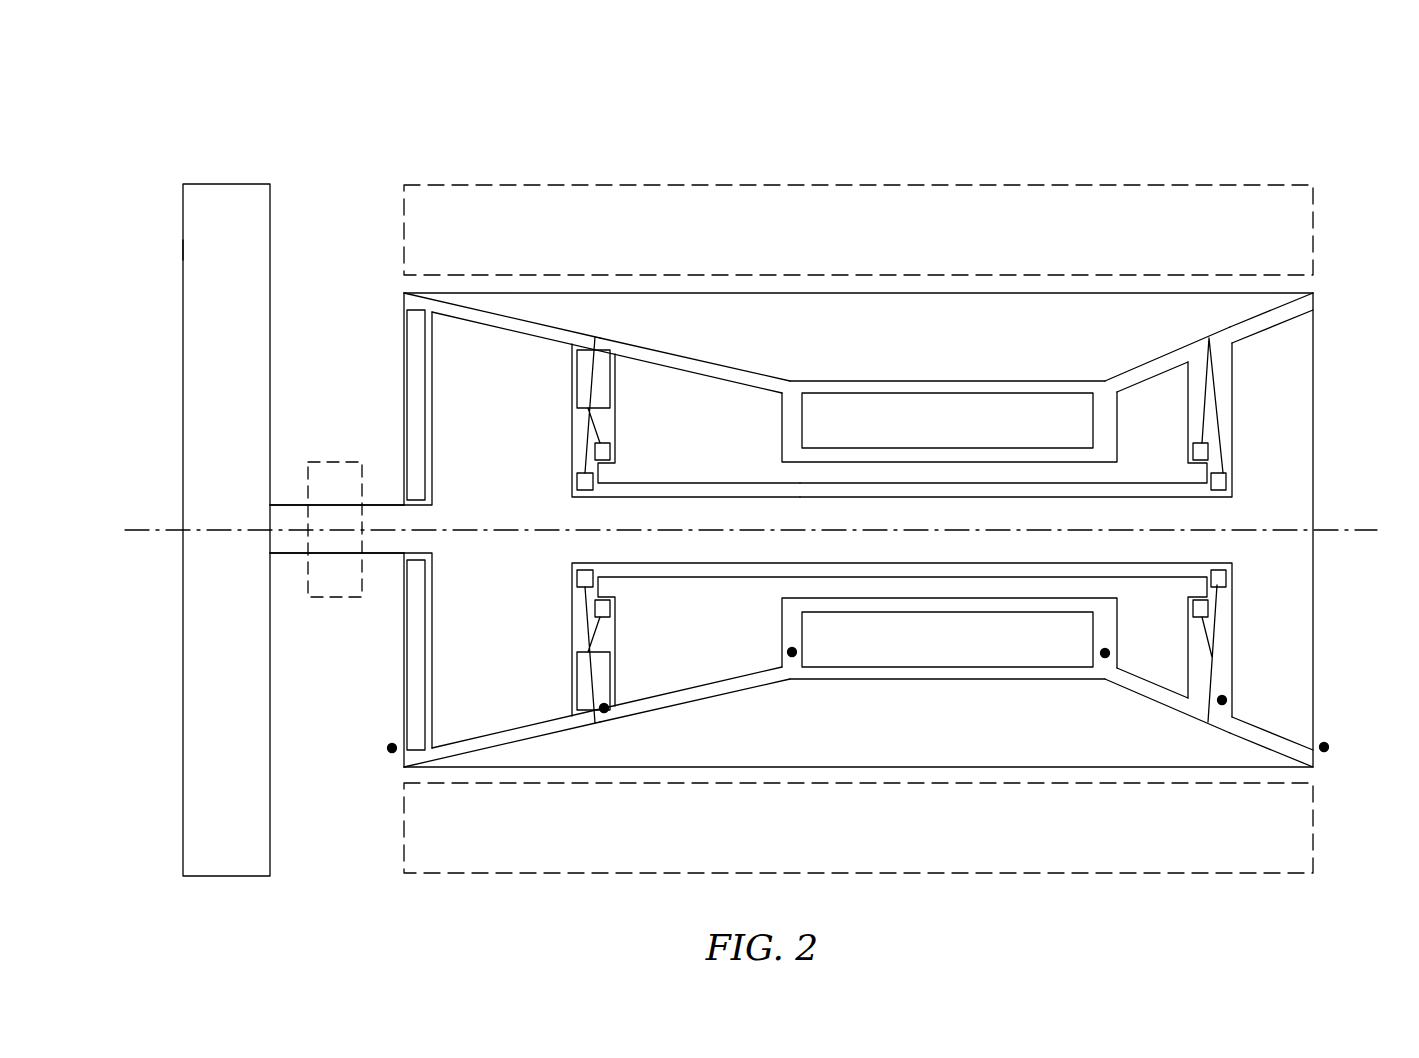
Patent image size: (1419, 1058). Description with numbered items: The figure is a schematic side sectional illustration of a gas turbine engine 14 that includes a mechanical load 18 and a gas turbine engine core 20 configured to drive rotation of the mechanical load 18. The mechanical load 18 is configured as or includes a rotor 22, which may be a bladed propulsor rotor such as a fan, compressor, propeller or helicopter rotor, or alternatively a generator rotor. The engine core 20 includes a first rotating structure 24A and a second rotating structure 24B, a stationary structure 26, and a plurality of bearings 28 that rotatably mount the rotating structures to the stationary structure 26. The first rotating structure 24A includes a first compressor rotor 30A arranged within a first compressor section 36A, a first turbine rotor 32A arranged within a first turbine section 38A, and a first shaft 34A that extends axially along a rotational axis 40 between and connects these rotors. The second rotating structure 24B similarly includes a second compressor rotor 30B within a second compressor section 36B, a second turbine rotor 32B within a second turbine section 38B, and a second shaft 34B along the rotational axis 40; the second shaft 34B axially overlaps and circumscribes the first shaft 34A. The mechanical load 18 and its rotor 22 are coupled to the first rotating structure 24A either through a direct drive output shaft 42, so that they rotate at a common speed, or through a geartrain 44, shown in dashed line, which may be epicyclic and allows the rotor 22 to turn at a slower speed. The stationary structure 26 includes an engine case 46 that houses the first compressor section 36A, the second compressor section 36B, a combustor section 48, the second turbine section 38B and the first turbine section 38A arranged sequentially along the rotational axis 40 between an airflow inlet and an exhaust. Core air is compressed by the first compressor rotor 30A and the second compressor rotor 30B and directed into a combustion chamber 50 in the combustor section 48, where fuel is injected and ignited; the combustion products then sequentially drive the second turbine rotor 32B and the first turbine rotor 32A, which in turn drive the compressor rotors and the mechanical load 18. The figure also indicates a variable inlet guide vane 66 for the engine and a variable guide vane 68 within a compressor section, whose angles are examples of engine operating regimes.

The gas turbine engine 14 is at (303, 109).
The mechanical load 18 is at (183, 184).
The gas turbine engine core 20 is at (400, 272).
The rotor 22 is at (183, 250).
The first rotating structure 24A is at (428, 388).
The second rotating structure 24B is at (652, 362).
The stationary structure 26 is at (950, 292).
The bearings 28 is at (585, 569).
The first compressor rotor 30A is at (500, 322).
The second compressor rotor 30B is at (718, 377).
The first turbine rotor 32A is at (1267, 328).
The second turbine rotor 32B is at (1153, 373).
The first shaft 34A is at (667, 493).
The second shaft 34B is at (857, 483).
The first compressor section 36A is at (506, 748).
The second compressor section 36B is at (695, 690).
The first turbine section 38A is at (1263, 742).
The second turbine section 38B is at (1148, 690).
The rotational axis 40 is at (1377, 532).
The output shaft 42 is at (285, 555).
The geartrain 44 is at (335, 598).
The engine case 46 is at (778, 377).
The combustor section 48 is at (937, 680).
The combustion chamber 50 is at (933, 437).
The variable inlet guide vane 66 is at (405, 438).
The variable guide vane 68 is at (577, 377).